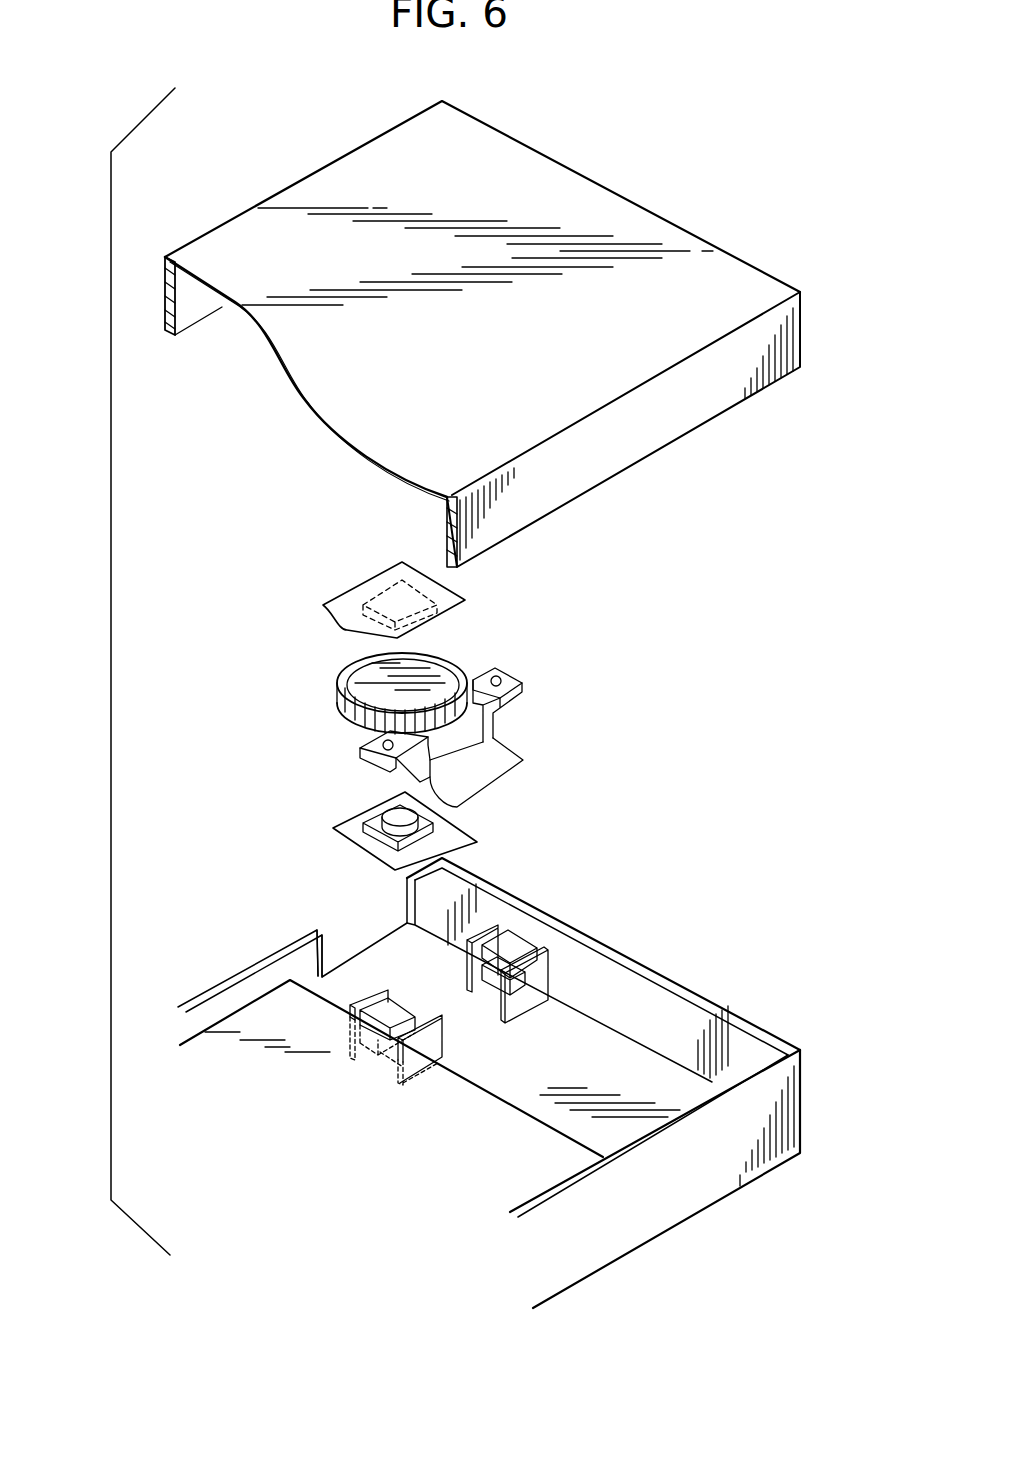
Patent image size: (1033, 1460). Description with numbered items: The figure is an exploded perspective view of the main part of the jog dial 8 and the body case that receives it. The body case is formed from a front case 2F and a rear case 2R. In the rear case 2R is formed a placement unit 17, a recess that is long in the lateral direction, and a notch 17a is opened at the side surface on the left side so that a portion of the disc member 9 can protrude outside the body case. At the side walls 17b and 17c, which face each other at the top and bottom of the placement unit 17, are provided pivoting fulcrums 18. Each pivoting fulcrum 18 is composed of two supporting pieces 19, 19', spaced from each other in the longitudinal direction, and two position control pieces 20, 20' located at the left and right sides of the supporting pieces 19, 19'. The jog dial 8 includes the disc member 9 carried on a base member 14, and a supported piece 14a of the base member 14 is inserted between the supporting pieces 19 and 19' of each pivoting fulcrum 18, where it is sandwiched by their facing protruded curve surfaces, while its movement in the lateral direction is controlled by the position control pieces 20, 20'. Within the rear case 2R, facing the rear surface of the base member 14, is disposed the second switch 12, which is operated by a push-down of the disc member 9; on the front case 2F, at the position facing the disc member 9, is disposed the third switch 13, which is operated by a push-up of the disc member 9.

The front case 2F is at (610, 218).
The rear case 2R is at (772, 1033).
The jog dial 8 is at (510, 668).
The disc member 9 is at (380, 682).
The second switch 12 is at (377, 835).
The third switch 13 is at (360, 610).
The base member 14 is at (493, 727).
The supported piece 14a is at (517, 695).
The placement unit 17 is at (622, 1067).
The notch 17a is at (322, 950).
The side wall 17b is at (733, 1035).
The side wall 17c is at (535, 1110).
The pivoting fulcrum 18 is at (458, 1025).
The supporting piece 19 is at (424, 1010).
The supporting piece 19' is at (442, 1022).
The position control piece 20 is at (357, 1017).
The position control piece 20' is at (526, 1063).